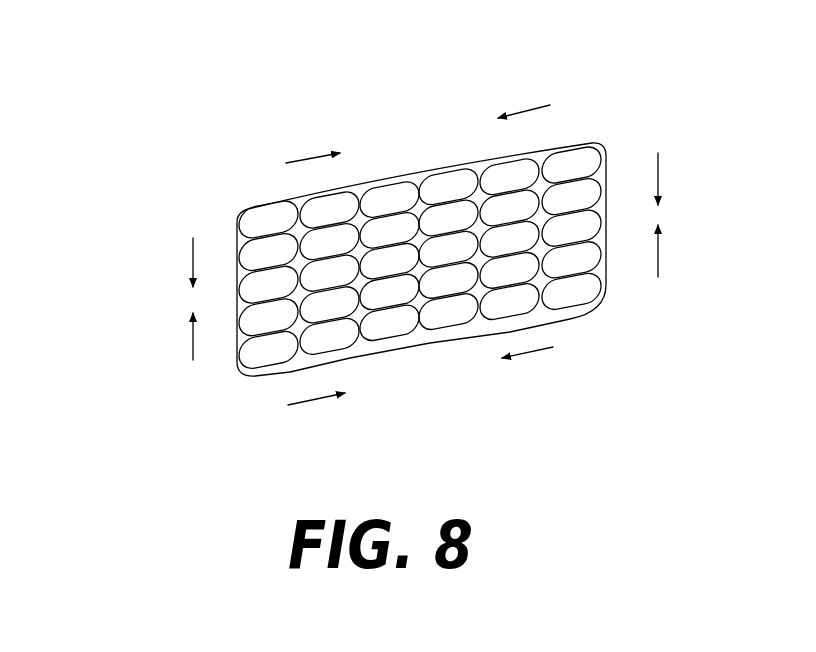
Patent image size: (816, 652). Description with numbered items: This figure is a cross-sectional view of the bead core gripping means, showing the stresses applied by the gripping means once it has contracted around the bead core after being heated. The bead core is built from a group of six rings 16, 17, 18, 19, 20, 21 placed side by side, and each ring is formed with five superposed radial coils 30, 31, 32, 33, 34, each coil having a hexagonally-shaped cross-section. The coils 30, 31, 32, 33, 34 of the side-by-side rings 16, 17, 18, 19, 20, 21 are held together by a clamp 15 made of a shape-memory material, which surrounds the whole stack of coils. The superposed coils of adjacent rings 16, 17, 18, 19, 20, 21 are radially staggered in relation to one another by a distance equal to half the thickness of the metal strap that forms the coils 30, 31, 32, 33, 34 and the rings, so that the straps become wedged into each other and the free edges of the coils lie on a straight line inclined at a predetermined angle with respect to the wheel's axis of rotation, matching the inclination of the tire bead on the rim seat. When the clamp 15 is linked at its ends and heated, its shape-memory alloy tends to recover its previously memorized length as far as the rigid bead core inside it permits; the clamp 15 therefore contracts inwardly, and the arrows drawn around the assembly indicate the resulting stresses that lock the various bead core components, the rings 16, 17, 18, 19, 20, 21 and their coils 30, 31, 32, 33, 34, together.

The clamp 15 is at (403, 163).
The ring 16 is at (281, 215).
The ring 17 is at (343, 203).
The ring 18 is at (407, 190).
The ring 19 is at (450, 181).
The ring 20 is at (547, 140).
The ring 21 is at (578, 160).
The radial coil 30 is at (247, 352).
The radial coil 31 is at (247, 320).
The radial coil 32 is at (248, 284).
The radial coil 33 is at (246, 250).
The radial coil 34 is at (240, 212).